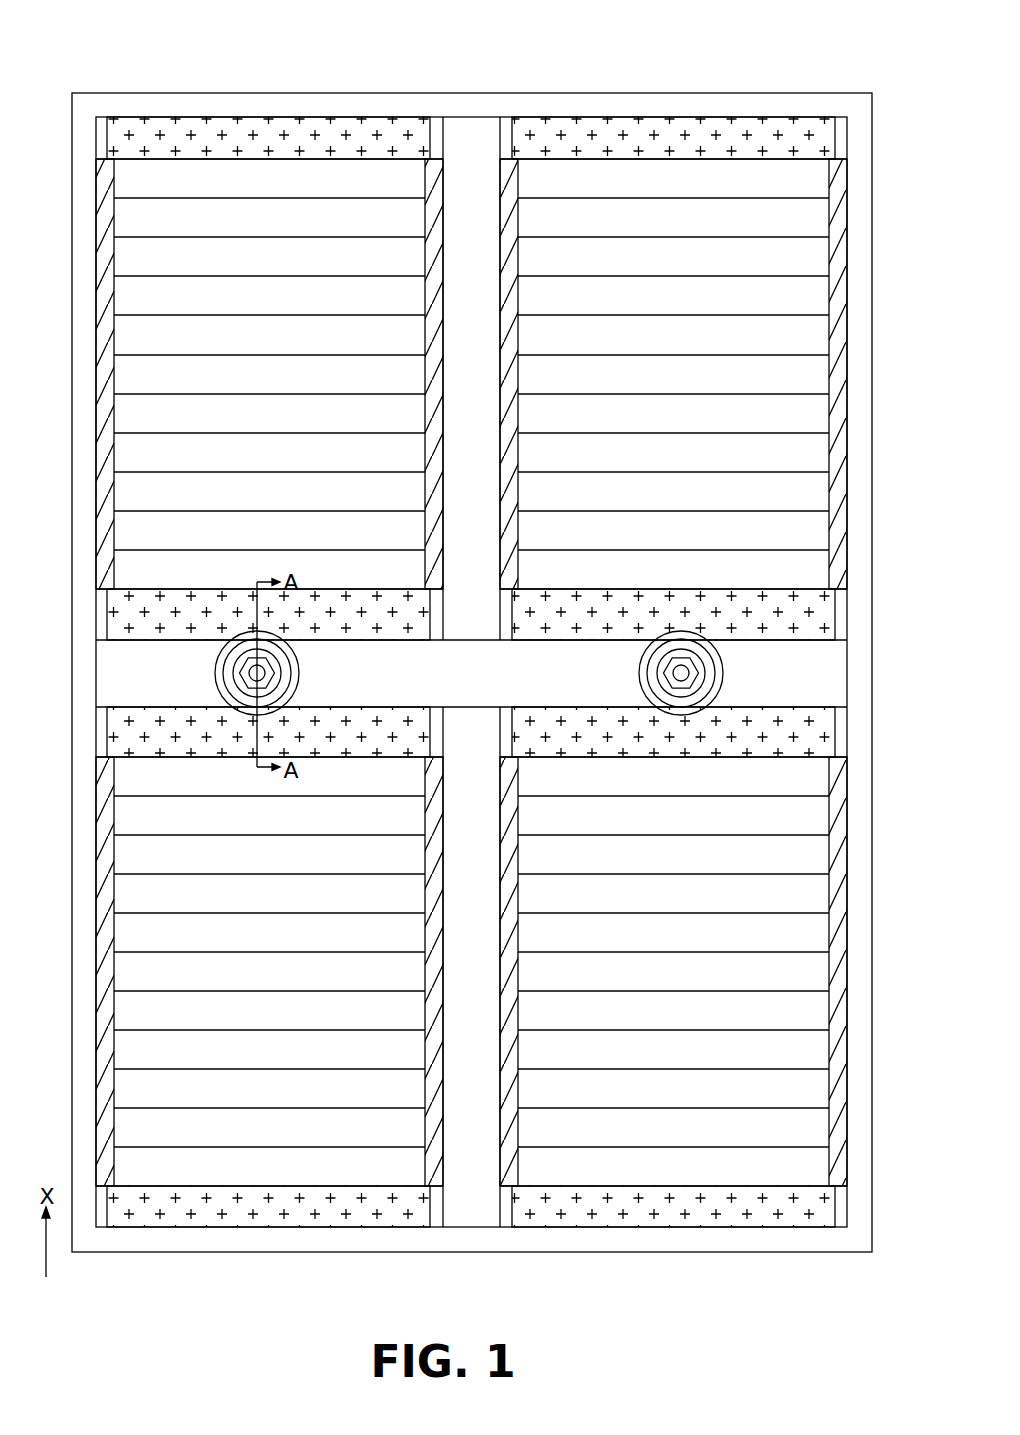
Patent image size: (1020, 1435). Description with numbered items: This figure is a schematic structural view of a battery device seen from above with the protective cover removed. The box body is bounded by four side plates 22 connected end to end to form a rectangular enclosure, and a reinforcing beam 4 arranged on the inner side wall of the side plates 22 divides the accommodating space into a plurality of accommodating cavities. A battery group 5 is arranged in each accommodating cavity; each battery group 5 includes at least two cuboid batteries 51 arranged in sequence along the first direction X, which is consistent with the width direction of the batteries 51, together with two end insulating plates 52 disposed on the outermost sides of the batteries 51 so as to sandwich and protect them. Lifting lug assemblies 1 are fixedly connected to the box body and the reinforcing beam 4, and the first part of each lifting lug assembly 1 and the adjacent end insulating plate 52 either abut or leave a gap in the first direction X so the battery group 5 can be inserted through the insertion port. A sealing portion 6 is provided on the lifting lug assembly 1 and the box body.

The lifting lug assembly 1 is at (237, 673).
The reinforcing beam 4 is at (475, 137).
The battery group 5 is at (269, 297).
The sealing portion 6 is at (100, 150).
The side plate 22 is at (532, 106).
The battery 51 is at (348, 212).
The end insulating plate 52 is at (222, 147).